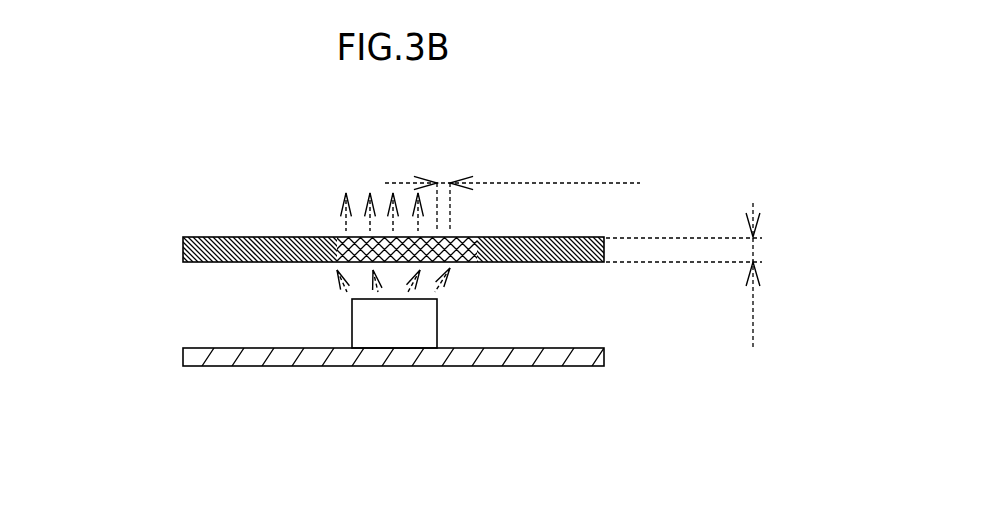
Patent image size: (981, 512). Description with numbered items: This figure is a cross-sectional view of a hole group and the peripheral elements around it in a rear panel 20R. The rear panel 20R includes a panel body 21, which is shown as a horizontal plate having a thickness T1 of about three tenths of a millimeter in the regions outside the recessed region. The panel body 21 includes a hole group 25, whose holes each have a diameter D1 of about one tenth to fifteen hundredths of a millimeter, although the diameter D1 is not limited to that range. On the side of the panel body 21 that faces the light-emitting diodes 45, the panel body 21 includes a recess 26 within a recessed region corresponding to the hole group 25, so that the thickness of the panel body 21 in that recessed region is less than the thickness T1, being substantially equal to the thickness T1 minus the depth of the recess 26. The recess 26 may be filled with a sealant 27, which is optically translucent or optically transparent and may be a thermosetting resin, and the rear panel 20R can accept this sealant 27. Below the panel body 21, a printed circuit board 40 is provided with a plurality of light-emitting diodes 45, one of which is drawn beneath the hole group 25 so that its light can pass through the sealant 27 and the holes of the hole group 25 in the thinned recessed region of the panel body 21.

The rear panel 20R is at (200, 230).
The panel body 21 is at (252, 253).
The hole group 25 is at (330, 222).
The recess 26 is at (465, 265).
The sealant 27 is at (327, 261).
The light-emitting diode 45 is at (388, 323).
The printed circuit board 40 is at (560, 363).
The hole diameter D1 is at (512, 189).
The panel body thickness T1 is at (700, 275).